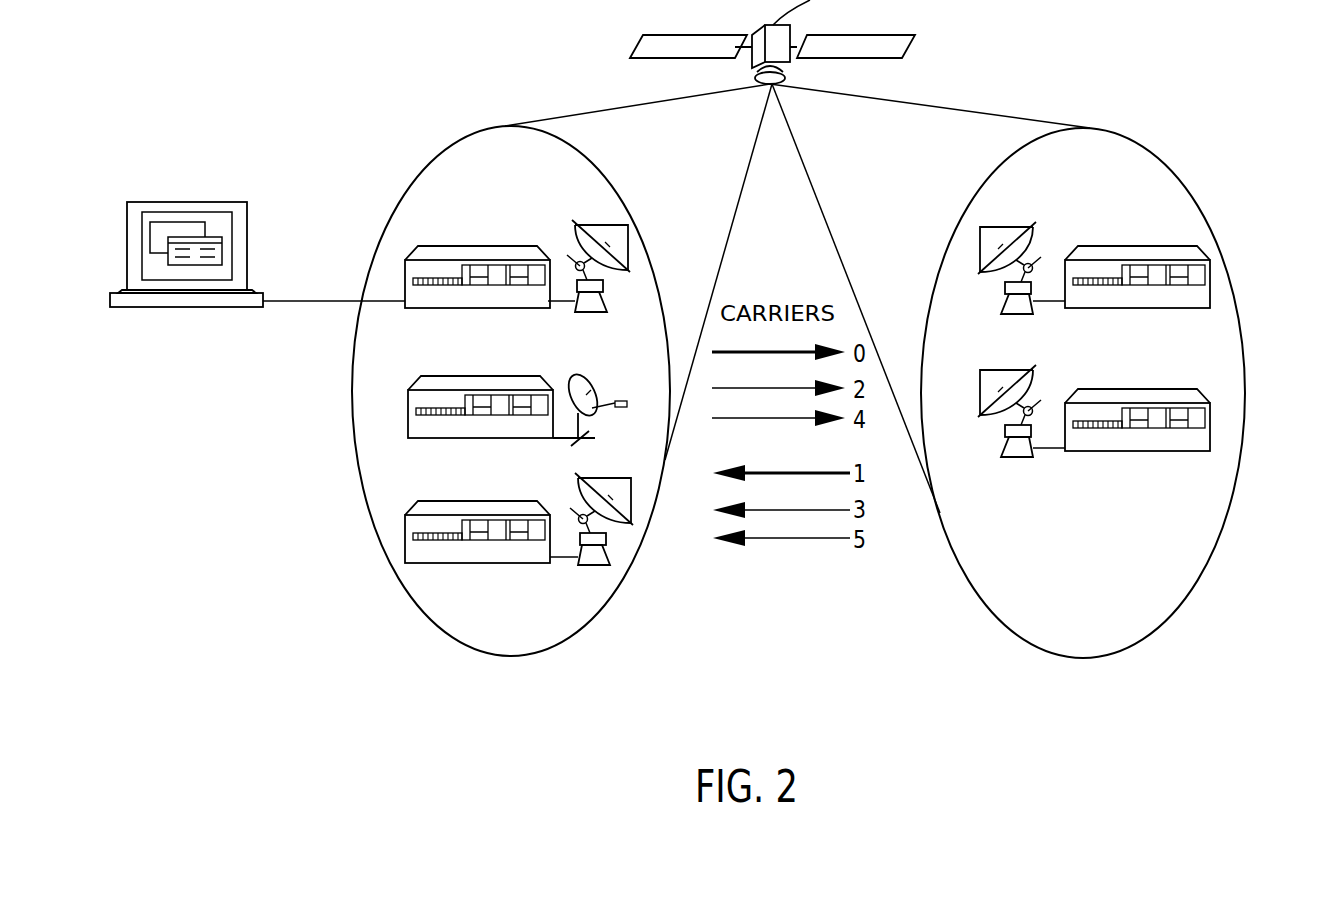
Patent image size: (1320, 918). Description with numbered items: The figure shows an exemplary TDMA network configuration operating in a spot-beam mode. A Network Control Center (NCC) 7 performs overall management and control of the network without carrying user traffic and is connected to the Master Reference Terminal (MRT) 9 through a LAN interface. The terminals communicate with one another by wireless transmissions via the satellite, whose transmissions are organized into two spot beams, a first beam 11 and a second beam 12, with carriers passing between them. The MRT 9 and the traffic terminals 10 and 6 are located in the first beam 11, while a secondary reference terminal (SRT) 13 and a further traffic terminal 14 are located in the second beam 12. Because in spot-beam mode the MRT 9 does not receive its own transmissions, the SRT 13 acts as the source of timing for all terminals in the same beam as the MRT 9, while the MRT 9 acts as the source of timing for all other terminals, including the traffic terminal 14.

The Network Control Center (NCC) 7 is at (150, 203).
The Master Reference Terminal (MRT) 9 is at (445, 308).
The traffic terminal 10 is at (408, 402).
The traffic terminal 6 is at (510, 565).
The beam 0 coverage area 11 is at (365, 497).
The beam 1 coverage area 12 is at (1235, 291).
The secondary reference terminal (SRT) 13 is at (1090, 310).
The traffic terminal 14 is at (1118, 452).